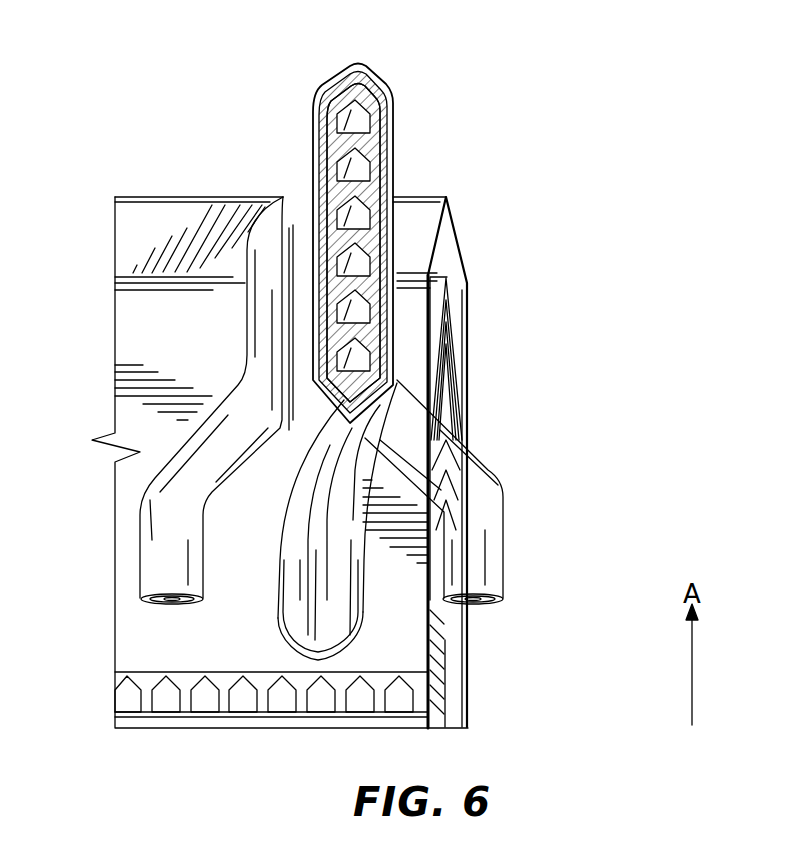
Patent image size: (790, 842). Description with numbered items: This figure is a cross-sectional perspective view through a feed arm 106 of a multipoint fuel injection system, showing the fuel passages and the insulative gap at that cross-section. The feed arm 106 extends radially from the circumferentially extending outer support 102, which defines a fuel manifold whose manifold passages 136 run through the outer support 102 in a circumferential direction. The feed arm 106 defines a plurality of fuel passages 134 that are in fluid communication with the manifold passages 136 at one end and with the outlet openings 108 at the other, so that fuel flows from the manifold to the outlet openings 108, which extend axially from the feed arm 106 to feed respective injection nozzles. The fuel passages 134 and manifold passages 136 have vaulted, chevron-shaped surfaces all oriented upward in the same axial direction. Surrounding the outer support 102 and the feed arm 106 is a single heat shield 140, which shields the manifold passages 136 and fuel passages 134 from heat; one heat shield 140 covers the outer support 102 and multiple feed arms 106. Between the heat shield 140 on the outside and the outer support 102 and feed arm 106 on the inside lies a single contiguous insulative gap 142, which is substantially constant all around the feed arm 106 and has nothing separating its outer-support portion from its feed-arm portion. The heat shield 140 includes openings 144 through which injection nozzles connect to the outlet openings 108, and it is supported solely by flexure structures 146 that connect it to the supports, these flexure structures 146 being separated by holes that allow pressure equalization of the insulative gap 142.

The outer support 102 is at (152, 237).
The feed arm 106 is at (337, 620).
The outlet openings 108 is at (172, 604).
The fuel passages 134 is at (358, 118).
The manifold passages 136 is at (482, 420).
The heat shield 140 is at (335, 83).
The insulative gap 142 is at (372, 90).
The openings 144 is at (150, 600).
The flexure structures 146 is at (255, 690).